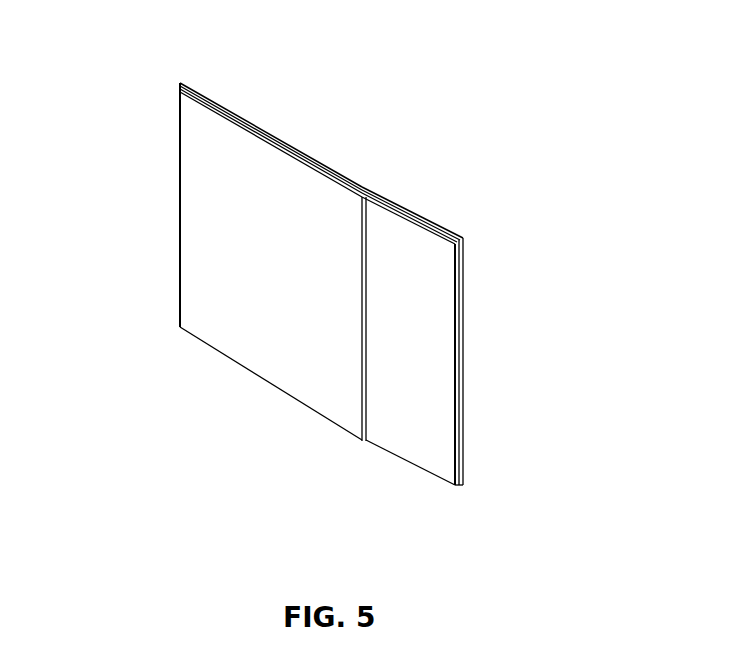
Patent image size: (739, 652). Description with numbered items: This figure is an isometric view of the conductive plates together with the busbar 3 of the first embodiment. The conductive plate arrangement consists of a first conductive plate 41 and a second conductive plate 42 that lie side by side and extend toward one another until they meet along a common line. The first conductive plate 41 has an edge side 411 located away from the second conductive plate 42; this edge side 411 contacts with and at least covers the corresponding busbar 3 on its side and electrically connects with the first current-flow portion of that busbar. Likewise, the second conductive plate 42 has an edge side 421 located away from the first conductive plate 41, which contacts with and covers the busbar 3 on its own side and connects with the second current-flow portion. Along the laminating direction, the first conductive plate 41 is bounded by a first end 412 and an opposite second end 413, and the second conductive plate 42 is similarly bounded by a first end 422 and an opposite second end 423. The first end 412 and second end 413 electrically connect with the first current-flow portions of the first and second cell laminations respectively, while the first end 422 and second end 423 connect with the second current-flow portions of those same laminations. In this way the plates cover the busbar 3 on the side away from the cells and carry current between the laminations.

The busbar 3 is at (329, 267).
The first conductive plate 41 is at (206, 220).
The edge side of the first conductive plate 411 is at (143, 168).
The first end of the first conductive plate 412 is at (222, 88).
The second end of the first conductive plate 413 is at (187, 382).
The second conductive plate 42 is at (440, 338).
The edge side of the second conductive plate 421 is at (495, 405).
The first end of the second conductive plate 422 is at (440, 208).
The second end of the second conductive plate 423 is at (385, 485).